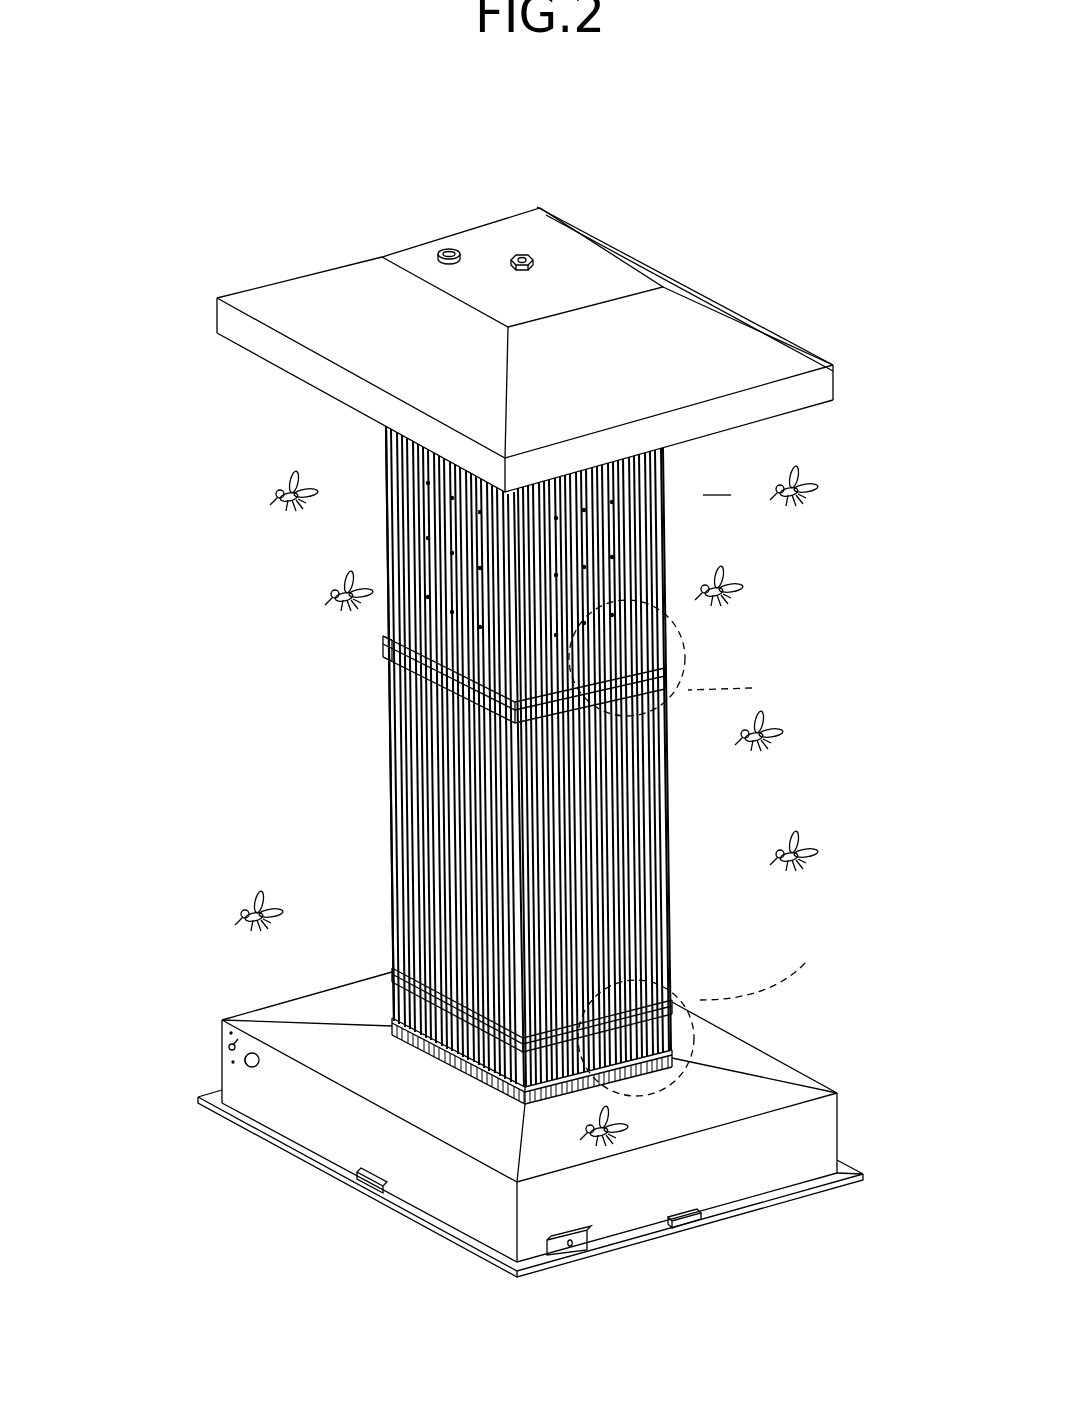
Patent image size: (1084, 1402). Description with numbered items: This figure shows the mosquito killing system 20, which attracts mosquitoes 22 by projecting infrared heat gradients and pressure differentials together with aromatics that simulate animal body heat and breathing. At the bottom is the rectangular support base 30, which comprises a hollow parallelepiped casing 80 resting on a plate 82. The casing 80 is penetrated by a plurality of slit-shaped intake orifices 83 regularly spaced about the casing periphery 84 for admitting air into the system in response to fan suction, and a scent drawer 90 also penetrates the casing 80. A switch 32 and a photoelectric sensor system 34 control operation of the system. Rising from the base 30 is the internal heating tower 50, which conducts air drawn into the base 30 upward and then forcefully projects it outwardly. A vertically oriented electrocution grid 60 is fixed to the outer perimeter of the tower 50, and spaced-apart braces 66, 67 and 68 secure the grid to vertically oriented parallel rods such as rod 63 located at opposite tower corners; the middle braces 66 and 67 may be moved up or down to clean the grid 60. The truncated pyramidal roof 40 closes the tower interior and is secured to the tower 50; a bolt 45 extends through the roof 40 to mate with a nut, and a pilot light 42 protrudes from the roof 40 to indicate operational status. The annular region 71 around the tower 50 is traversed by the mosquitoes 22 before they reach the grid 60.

The mosquito killing system 20 is at (842, 271).
The mosquitoes 22 is at (324, 592).
The support base 30 is at (433, 1255).
The switch 32 is at (223, 1058).
The photoelectric sensor system 34 is at (248, 1068).
The truncated pyramidal roof 40 is at (655, 251).
The pilot light 42 is at (446, 249).
The bolt 45 is at (536, 258).
The heating tower 50 is at (567, 492).
The electrocution grid 60 is at (445, 483).
The rod 63 is at (397, 910).
The brace 66 is at (381, 642).
The brace 67 is at (392, 975).
The brace 68 is at (392, 1027).
The annular region 71 is at (717, 475).
The casing 80 is at (780, 1068).
The plate 82 is at (406, 1216).
The intake orifices 83 is at (365, 1192).
The casing periphery 84 is at (760, 1170).
The scent drawer 90 is at (588, 1245).